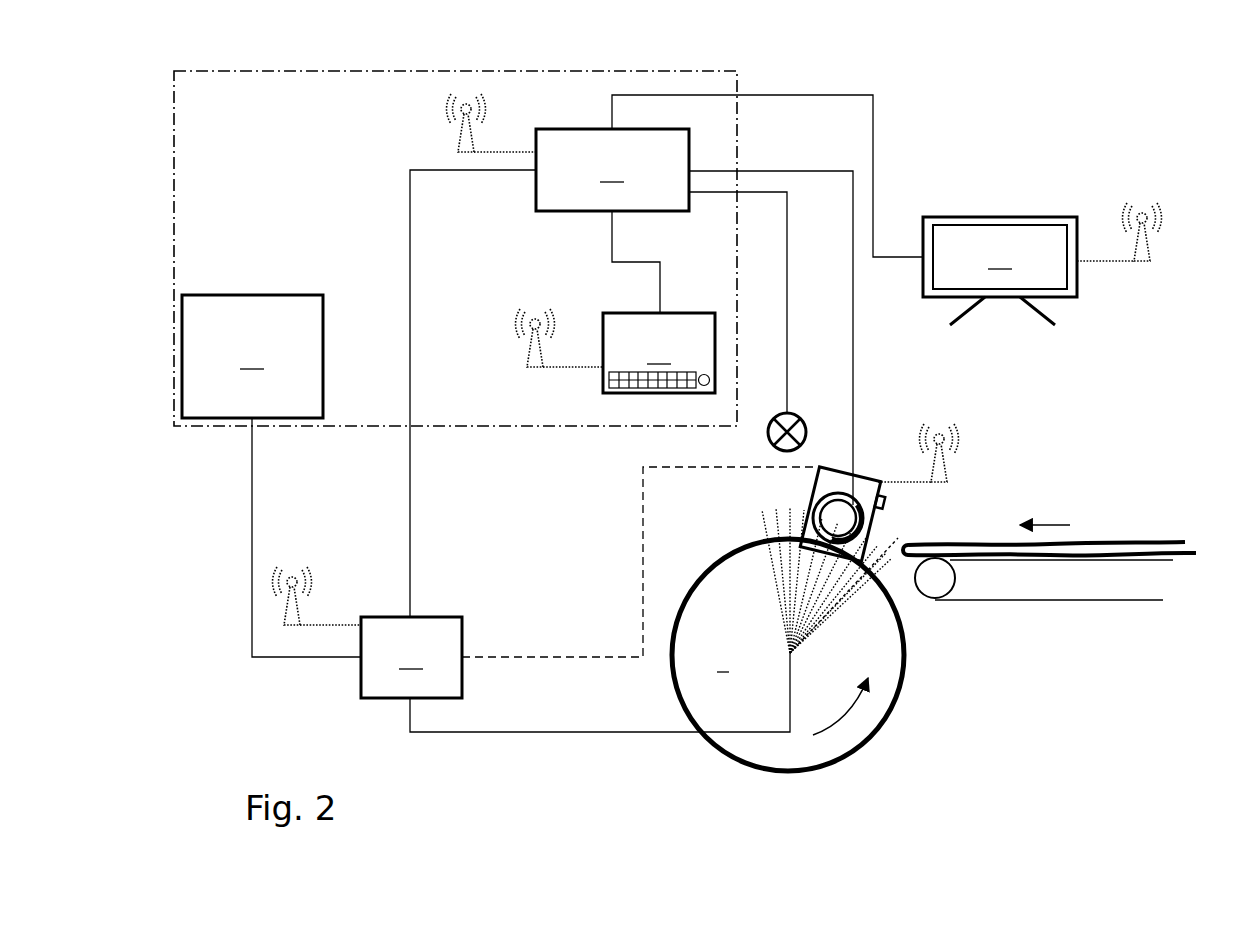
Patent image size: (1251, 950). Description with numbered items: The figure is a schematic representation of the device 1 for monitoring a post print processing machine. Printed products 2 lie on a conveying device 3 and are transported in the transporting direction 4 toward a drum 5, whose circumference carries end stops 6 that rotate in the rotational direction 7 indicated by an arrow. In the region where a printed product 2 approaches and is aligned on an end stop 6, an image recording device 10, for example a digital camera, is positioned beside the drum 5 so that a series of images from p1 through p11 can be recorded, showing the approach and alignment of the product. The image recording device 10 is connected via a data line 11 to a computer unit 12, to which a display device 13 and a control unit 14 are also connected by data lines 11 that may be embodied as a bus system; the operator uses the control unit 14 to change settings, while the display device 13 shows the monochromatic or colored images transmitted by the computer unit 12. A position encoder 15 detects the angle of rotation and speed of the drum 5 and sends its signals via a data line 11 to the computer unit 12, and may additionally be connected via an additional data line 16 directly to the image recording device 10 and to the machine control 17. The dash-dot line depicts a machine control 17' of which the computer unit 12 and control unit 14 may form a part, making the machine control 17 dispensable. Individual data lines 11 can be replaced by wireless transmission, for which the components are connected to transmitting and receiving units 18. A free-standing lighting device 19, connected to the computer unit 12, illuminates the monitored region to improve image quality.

The device for monitoring a post print processing machine 1 is at (1005, 747).
The printed product 2 is at (967, 540).
The conveying device 3 is at (1100, 600).
The transporting direction 4 is at (1045, 511).
The drum 5 is at (788, 655).
The end stop 6 is at (855, 520).
The rotational direction 7 is at (840, 706).
The image recording device 10 is at (858, 478).
The data line 11 is at (612, 243).
The computer unit 12 is at (612, 170).
The display device 13 is at (1000, 271).
The control unit 14 is at (659, 353).
The position encoder 15 is at (411, 657).
The additional data line 16 is at (532, 657).
The machine control 17 is at (252, 356).
The machine control 17' is at (455, 219).
The transmitting and receiving unit 18 is at (466, 132).
The lighting device 19 is at (806, 425).
The recorded image p1 is at (883, 560).
The recorded image p11 is at (762, 525).